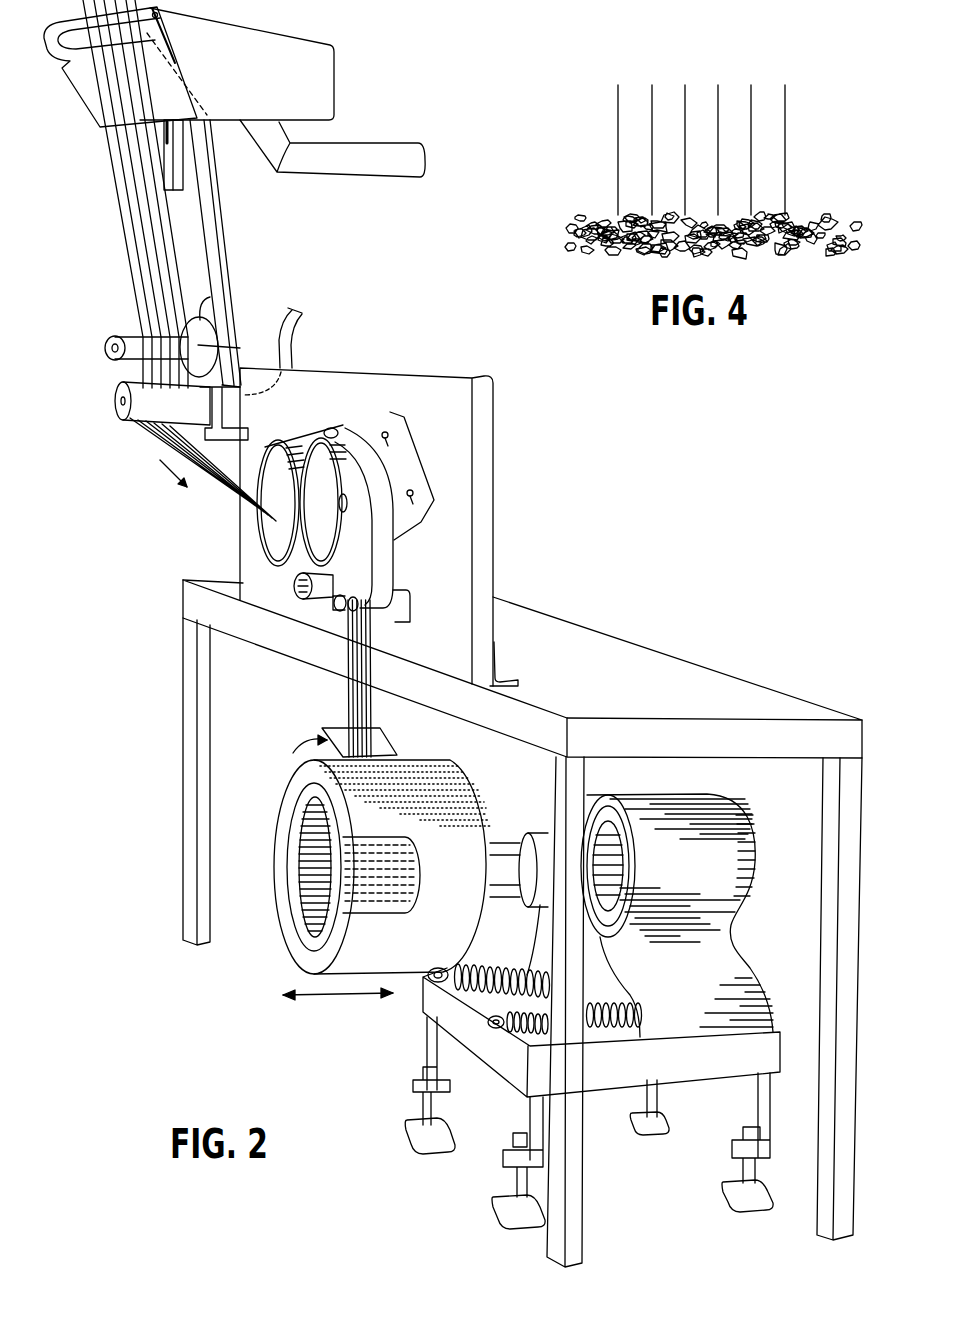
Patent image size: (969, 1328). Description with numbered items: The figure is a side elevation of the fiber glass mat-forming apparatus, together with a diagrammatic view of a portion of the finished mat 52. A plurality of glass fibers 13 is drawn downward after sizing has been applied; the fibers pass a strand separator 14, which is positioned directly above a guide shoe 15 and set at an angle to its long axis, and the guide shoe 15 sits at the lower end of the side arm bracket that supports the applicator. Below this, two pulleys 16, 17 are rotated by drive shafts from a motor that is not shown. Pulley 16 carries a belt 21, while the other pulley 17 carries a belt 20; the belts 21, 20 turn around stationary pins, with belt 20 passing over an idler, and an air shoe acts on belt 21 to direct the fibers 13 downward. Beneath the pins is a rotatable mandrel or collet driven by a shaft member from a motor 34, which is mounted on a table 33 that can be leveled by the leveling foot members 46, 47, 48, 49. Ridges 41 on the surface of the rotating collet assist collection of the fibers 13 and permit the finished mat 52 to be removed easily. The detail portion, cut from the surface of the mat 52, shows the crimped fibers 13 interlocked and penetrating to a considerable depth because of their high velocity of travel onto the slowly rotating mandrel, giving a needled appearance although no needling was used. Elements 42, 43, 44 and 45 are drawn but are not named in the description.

In FIG. 2, the glass fibers 13 is at (128, 275).
In FIG. 4, the glass fibers 13 is at (788, 138).
In FIG. 2, the strand separator 14 is at (138, 338).
In FIG. 2, the guide shoe 15 is at (130, 420).
In FIG. 2, the pulley 16 is at (280, 445).
In FIG. 2, the pulley 17 is at (335, 432).
In FIG. 2, the belt 20 is at (392, 568).
In FIG. 2, the belt 21 is at (292, 562).
In FIG. 2, the table 33 is at (738, 1073).
In FIG. 2, the motor 34 is at (752, 858).
In FIG. 2, the ridges 41 is at (306, 796).
In FIG. 2, the upright panel 42 is at (490, 378).
In FIG. 2, the table 43 is at (735, 676).
In FIG. 2, the bracket 44 is at (402, 625).
In FIG. 2, the drive shaft coupling 45 is at (548, 830).
In FIG. 2, the leveling foot member 46 is at (437, 1113).
In FIG. 2, the leveling foot member 47 is at (510, 1186).
In FIG. 2, the leveling foot member 48 is at (655, 1100).
In FIG. 2, the leveling foot member 49 is at (740, 1172).
In FIG. 2, the mat 52 is at (468, 800).